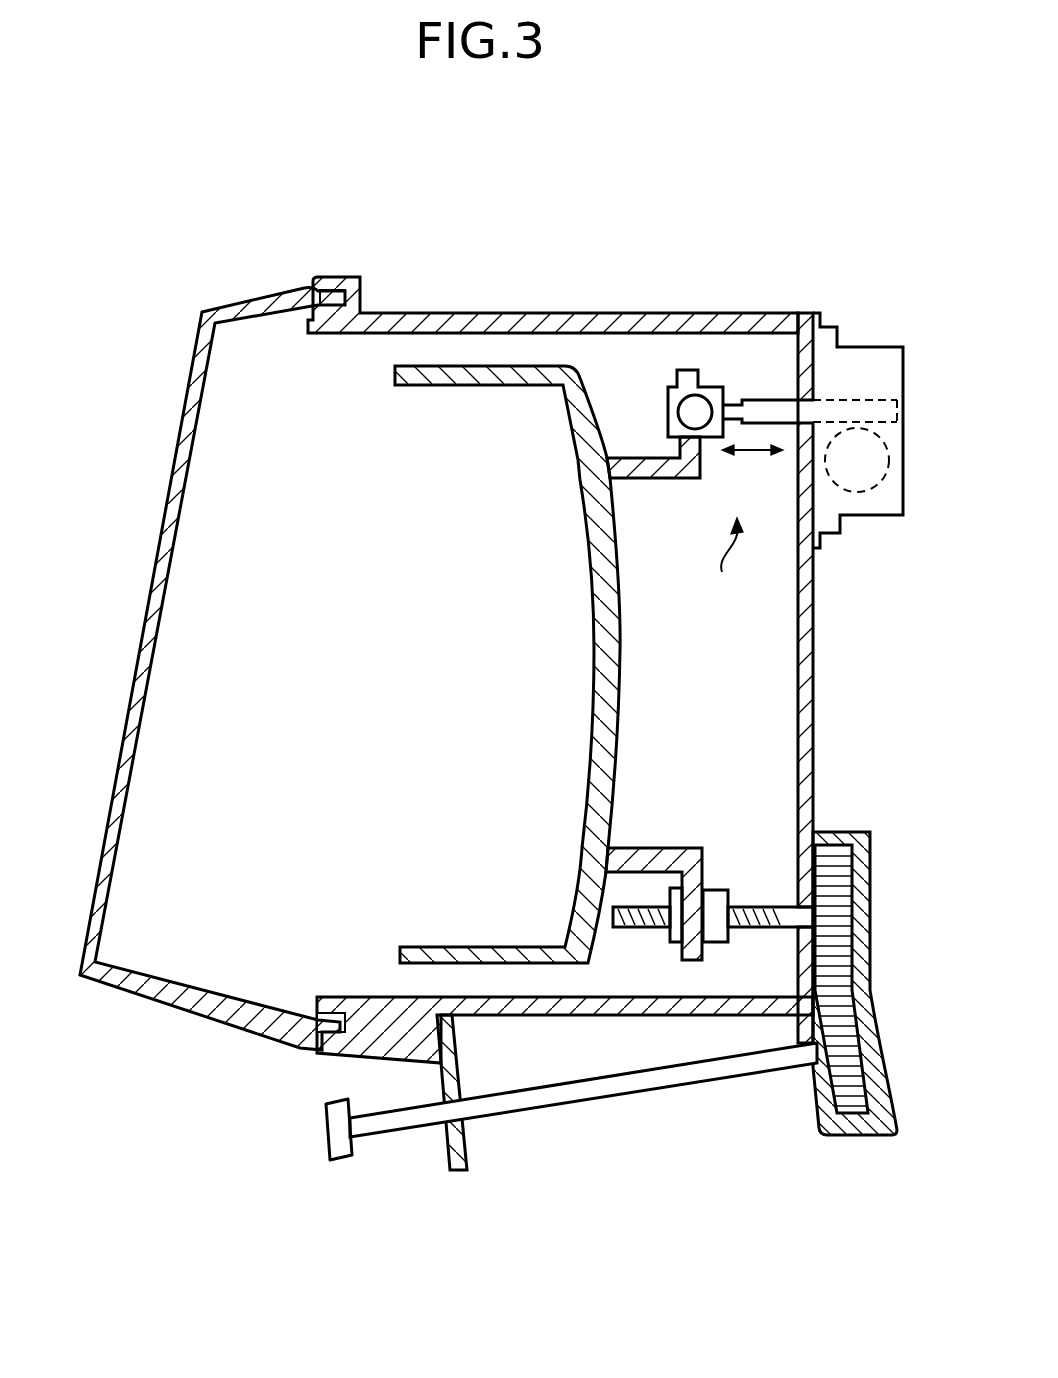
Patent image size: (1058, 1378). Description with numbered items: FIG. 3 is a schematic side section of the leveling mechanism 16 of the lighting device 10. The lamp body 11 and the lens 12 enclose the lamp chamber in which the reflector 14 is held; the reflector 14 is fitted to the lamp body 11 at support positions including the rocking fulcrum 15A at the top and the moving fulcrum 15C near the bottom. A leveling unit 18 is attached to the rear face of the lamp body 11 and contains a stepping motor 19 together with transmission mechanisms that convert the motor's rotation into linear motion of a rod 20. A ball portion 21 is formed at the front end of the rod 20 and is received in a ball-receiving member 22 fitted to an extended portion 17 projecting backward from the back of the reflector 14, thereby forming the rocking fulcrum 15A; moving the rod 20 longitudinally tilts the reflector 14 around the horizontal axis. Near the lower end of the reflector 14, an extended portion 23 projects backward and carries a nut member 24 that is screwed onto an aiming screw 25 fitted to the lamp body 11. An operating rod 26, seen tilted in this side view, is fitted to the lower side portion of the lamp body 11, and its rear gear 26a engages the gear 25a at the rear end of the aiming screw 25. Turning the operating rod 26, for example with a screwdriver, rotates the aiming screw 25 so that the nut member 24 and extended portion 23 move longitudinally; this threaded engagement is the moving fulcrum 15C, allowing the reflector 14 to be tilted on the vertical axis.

The lighting device 10 is at (291, 222).
The lamp body 11 is at (483, 312).
The lens 12 is at (166, 466).
The reflector 14 is at (598, 645).
The rocking fulcrum 15A is at (757, 247).
The moving fulcrum 15C is at (664, 952).
The leveling mechanism 16 is at (732, 564).
The extended portion 17 is at (655, 480).
The leveling unit 18 is at (877, 346).
The stepping motor 19 is at (877, 492).
The rod 20 is at (760, 400).
The ball portion 21 is at (700, 410).
The ball-receiving member 22 is at (668, 398).
The extended portion 23 is at (652, 860).
The nut member 24 is at (714, 889).
The aiming screw 25 is at (787, 905).
The gear 25a is at (838, 862).
The operating rod 26 is at (651, 1080).
The gear 26a is at (849, 1106).